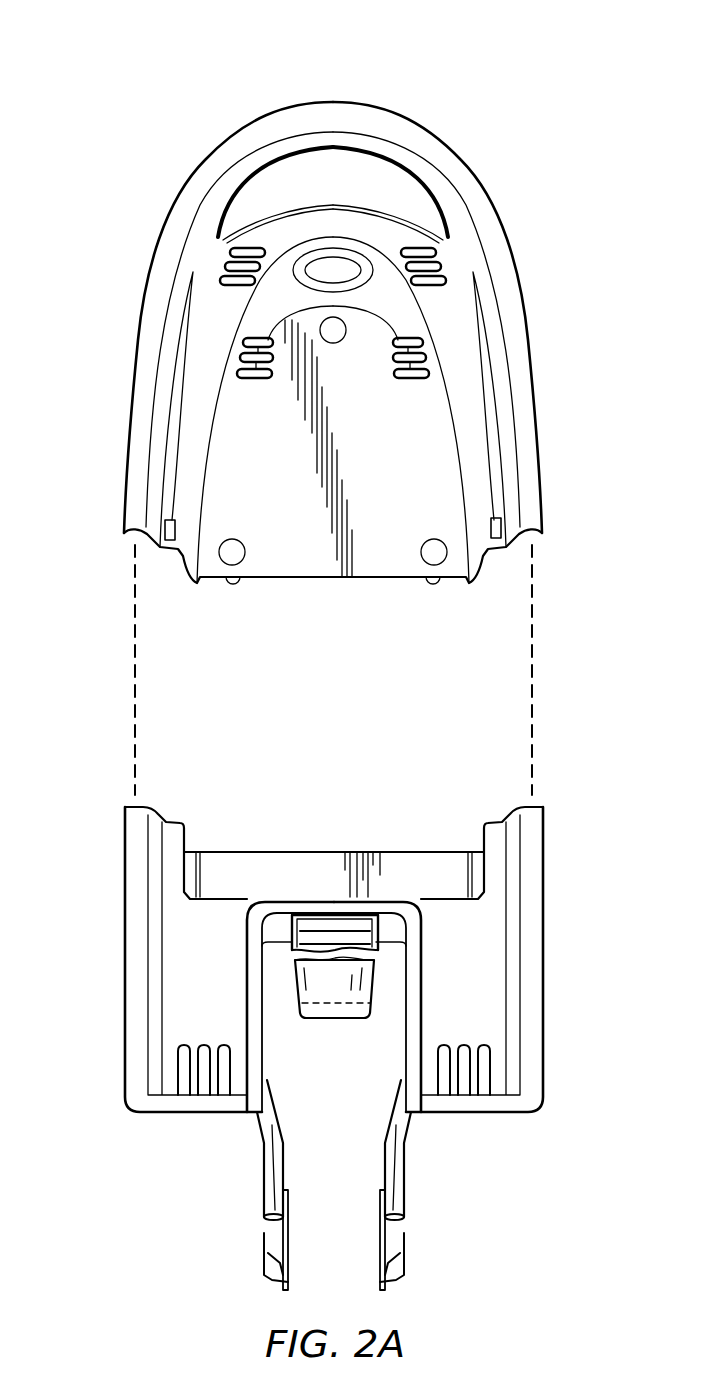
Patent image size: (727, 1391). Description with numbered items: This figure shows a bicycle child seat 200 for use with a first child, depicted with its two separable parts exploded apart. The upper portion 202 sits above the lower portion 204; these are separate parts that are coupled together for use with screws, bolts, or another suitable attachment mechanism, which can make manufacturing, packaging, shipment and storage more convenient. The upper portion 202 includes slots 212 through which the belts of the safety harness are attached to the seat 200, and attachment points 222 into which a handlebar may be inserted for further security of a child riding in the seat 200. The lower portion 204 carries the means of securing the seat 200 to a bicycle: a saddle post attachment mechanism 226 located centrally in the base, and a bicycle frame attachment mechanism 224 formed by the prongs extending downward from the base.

The seat 200 is at (235, 65).
The upper portion 202 is at (180, 208).
The slots 212 is at (404, 396).
The attachment points 222 is at (503, 528).
The lower portion 204 is at (122, 1012).
The saddle post attachment mechanism 226 is at (337, 960).
The bicycle frame attachment mechanism 224 is at (407, 1203).